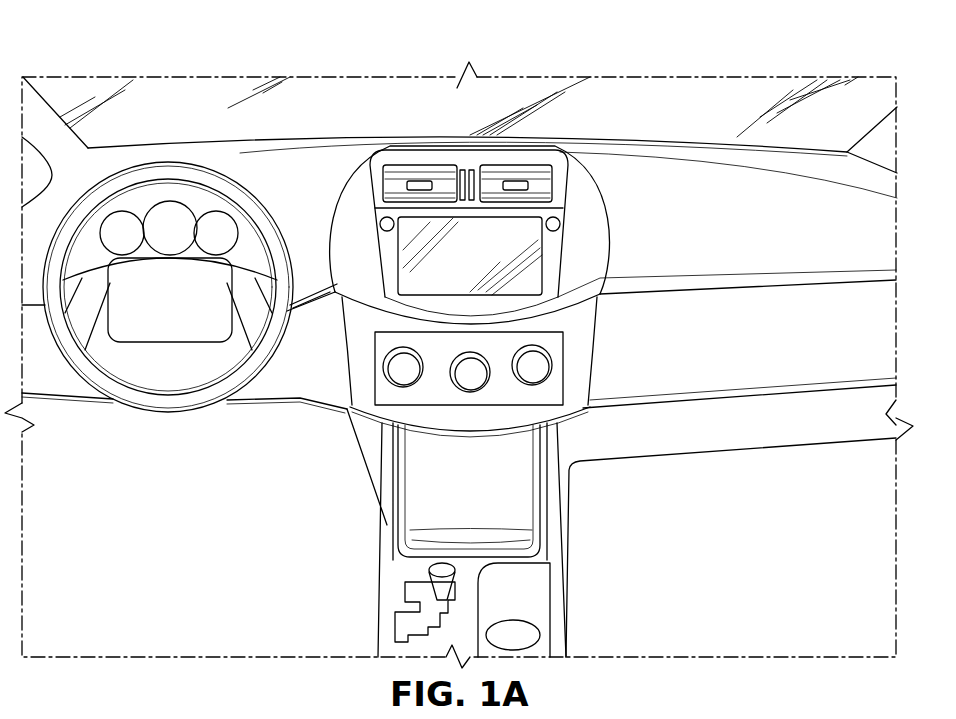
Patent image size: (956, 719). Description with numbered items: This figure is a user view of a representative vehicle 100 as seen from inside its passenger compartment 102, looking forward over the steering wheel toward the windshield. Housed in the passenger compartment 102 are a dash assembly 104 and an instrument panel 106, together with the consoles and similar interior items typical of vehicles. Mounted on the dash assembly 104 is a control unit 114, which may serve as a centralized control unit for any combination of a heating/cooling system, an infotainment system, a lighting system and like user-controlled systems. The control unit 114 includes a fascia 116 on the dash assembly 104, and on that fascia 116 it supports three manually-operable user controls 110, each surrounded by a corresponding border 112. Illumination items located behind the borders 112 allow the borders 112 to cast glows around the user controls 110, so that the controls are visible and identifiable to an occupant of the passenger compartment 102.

The vehicle 100 is at (213, 75).
The passenger compartment 102 is at (213, 105).
The dash assembly 104 is at (585, 141).
The instrument panel 106 is at (225, 143).
The user controls 110 is at (552, 365).
The borders 112 is at (548, 378).
The control unit 114 is at (536, 351).
The fascia 116 is at (563, 345).